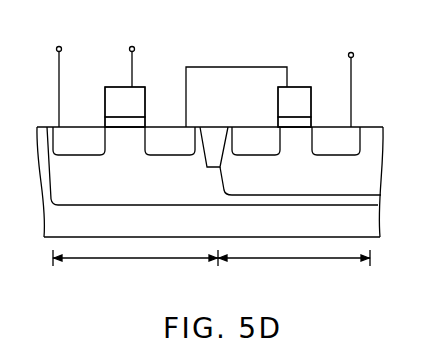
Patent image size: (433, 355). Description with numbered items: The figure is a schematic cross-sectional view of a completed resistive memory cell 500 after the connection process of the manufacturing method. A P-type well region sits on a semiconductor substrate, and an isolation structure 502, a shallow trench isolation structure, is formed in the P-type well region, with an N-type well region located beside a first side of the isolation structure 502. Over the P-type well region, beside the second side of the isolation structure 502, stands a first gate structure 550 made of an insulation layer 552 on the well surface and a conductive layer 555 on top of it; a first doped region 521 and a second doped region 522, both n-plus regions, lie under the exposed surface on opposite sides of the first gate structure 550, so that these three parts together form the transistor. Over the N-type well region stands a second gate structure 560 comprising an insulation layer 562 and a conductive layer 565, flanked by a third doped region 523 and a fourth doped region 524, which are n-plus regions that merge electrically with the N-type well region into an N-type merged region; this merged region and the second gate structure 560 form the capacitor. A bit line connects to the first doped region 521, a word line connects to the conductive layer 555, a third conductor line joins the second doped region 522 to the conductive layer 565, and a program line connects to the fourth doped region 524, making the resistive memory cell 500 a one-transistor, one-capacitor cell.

The resistive memory cell 500 is at (214, 46).
The isolation structure 502 is at (209, 167).
The first doped region 521 is at (80, 155).
The second doped region 522 is at (170, 155).
The third doped region 523 is at (247, 155).
The fourth doped region 524 is at (337, 155).
The first gate structure 550 is at (105, 88).
The insulation layer 552 is at (137, 120).
The conductive layer 555 is at (118, 79).
The second gate structure 560 is at (278, 88).
The insulation layer 562 is at (311, 119).
The conductive layer 565 is at (298, 87).